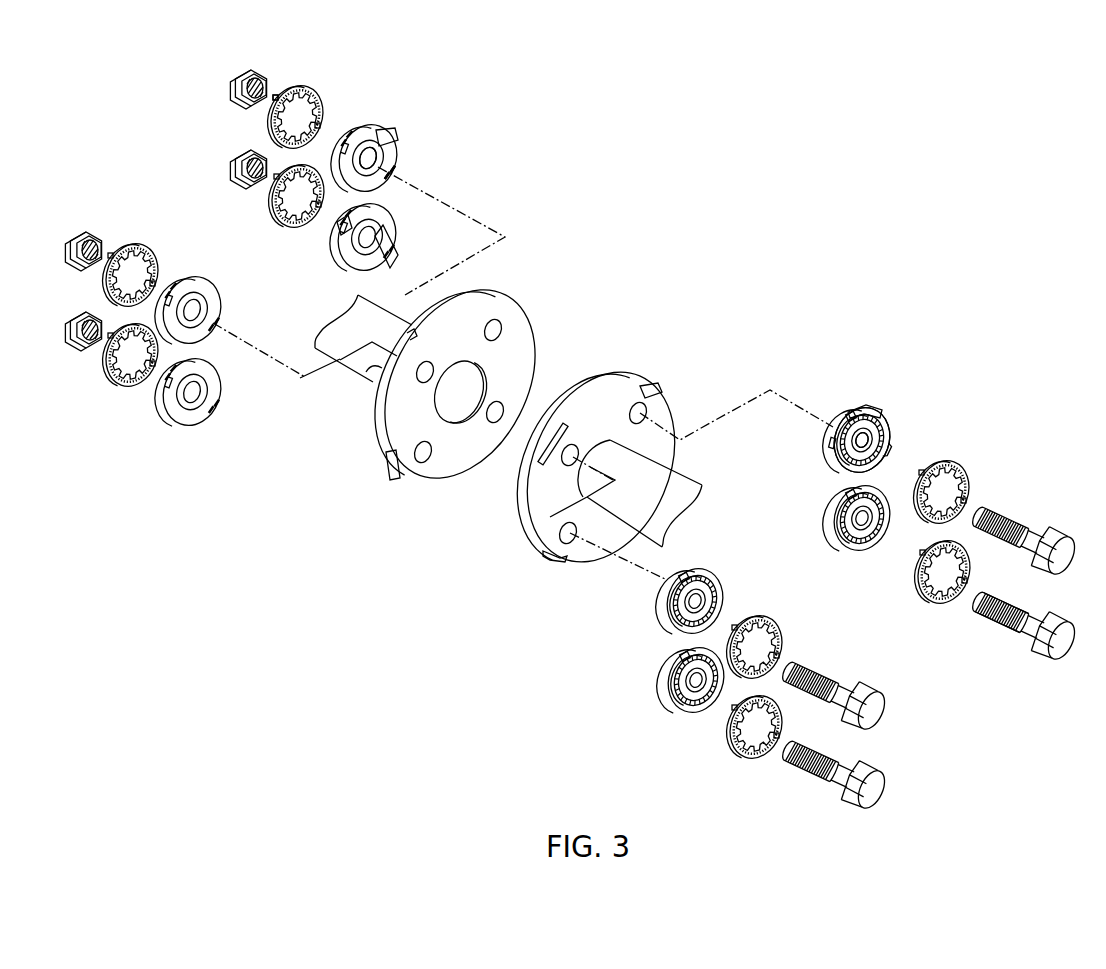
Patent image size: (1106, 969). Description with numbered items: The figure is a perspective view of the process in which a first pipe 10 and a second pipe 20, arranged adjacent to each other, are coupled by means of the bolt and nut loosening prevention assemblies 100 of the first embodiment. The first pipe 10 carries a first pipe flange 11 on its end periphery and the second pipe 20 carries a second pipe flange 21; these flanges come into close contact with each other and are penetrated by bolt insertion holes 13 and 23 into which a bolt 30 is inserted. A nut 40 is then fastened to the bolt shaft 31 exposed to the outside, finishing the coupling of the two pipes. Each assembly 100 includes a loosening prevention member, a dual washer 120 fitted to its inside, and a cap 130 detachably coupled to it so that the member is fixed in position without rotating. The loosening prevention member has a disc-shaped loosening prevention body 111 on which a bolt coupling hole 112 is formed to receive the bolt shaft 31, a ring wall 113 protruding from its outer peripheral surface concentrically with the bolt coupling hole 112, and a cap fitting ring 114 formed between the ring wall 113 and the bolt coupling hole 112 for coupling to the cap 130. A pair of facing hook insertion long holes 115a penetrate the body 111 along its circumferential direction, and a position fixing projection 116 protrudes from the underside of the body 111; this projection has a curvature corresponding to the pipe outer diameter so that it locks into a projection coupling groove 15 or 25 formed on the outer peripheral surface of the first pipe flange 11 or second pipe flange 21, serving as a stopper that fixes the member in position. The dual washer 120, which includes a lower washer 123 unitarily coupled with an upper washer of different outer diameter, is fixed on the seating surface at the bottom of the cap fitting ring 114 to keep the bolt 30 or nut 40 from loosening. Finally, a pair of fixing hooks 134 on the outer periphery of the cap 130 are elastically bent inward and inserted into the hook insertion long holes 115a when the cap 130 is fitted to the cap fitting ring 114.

The first pipe 10 is at (678, 507).
The first pipe flange 11 is at (528, 532).
The bolt insertion holes 13 is at (575, 540).
The projection coupling groove 15 is at (555, 567).
The second pipe 20 is at (343, 328).
The second pipe flange 21 is at (517, 345).
The bolt insertion holes 23 is at (503, 322).
The projection coupling groove 25 is at (375, 377).
The bolt 30 is at (1068, 650).
The bolt shaft 31 is at (997, 615).
The nut 40 is at (237, 100).
The bolt and nut loosening prevention assembly 100 is at (938, 315).
The loosening prevention body 111 is at (380, 193).
The bolt coupling hole 112 is at (382, 145).
The ring wall 113 is at (888, 437).
The cap fitting ring 114 is at (832, 458).
The hook insertion long holes 115a is at (395, 160).
The position fixing projection 116 is at (397, 135).
The dual washer 120 is at (830, 427).
The lower washer 123 is at (207, 407).
The cap 130 is at (307, 85).
The fixing hooks 134 is at (276, 97).